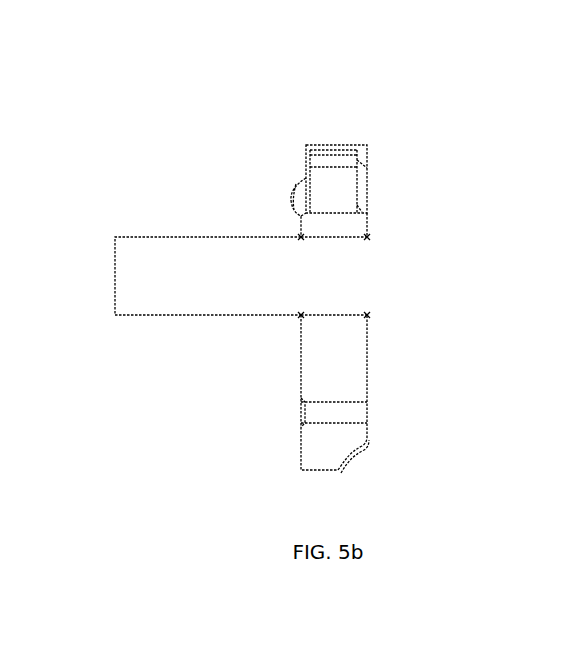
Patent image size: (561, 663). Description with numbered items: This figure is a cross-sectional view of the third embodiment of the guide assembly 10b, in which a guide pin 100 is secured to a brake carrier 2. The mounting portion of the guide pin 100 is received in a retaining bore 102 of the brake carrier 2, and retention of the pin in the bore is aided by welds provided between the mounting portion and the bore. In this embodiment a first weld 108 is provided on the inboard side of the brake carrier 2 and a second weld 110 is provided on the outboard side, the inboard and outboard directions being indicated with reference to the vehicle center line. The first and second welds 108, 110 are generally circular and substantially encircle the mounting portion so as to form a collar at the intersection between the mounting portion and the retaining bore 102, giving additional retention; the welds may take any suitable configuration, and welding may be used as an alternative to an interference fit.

The guide assembly 10b is at (143, 500).
The brake carrier 2 is at (360, 145).
The guide pin 100 is at (225, 297).
The first weld 108 is at (300, 237).
The second weld 110 is at (367, 237).
The retaining bore 102 is at (365, 288).